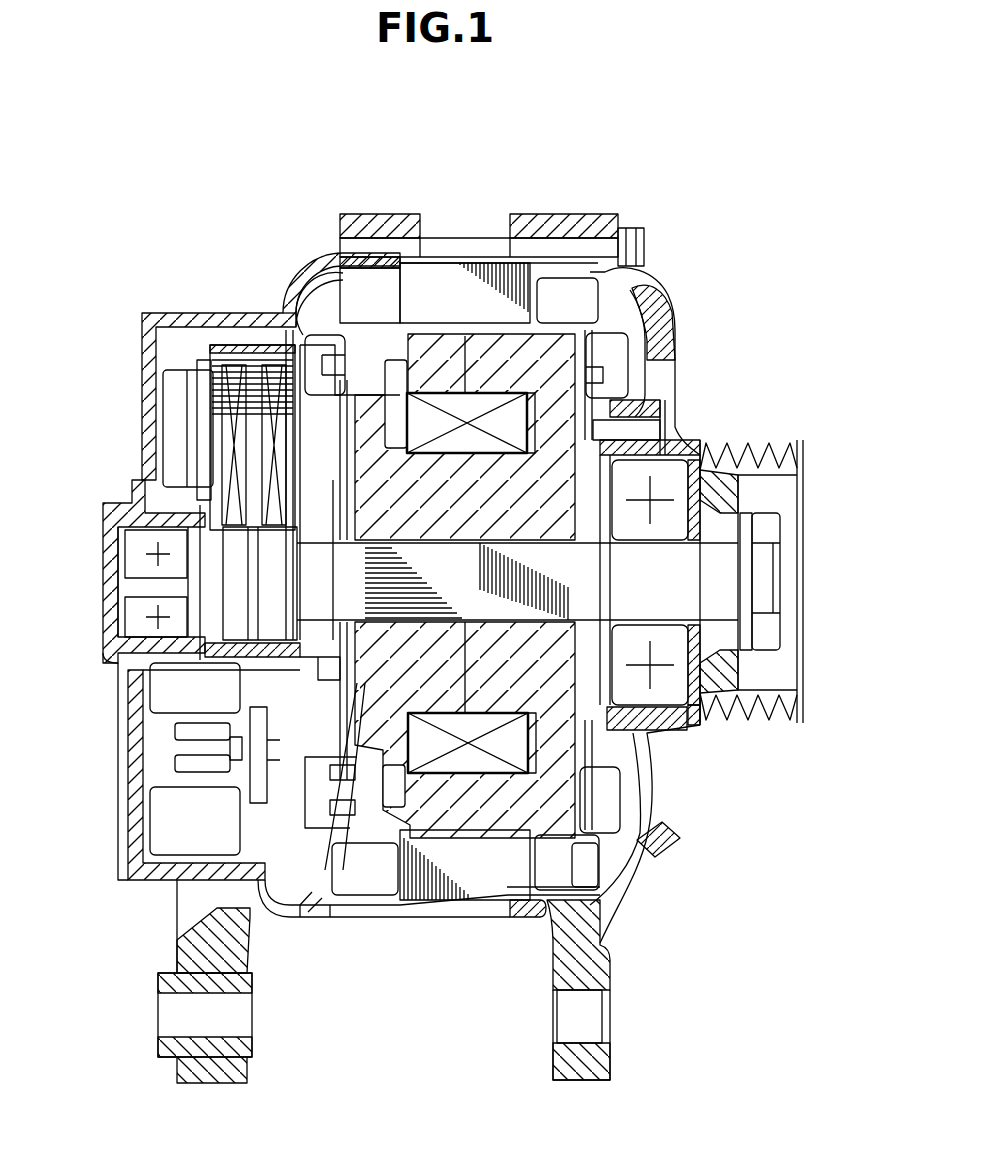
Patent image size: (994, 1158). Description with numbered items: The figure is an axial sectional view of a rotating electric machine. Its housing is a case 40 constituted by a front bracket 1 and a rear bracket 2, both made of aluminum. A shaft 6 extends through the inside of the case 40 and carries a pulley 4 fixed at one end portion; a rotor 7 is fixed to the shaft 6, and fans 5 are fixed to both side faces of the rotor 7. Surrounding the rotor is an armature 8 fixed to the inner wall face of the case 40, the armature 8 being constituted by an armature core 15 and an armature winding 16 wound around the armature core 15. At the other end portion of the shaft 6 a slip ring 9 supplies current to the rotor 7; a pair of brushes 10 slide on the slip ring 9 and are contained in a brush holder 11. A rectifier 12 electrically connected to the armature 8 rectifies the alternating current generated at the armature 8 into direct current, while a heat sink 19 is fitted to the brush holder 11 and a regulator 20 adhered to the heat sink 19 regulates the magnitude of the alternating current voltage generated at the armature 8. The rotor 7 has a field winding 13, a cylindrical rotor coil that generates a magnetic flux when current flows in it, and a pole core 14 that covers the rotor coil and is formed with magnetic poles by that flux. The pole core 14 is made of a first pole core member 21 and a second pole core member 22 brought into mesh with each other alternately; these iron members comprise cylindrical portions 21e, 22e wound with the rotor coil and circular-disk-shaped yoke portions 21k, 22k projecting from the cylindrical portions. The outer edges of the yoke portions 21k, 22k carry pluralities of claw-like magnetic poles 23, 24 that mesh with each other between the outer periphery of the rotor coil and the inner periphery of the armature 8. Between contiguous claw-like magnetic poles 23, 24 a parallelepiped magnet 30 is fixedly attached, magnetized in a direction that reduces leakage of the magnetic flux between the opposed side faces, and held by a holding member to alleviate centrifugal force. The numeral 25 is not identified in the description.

The front bracket 1 is at (537, 217).
The rear bracket 2 is at (397, 221).
The pulley 4 is at (740, 465).
The fans 5 is at (655, 850).
The shaft 6 is at (717, 553).
The rotor 7 is at (745, 770).
The armature 8 is at (625, 162).
The slip ring 9 is at (237, 572).
The brushes 10 is at (122, 540).
The brush holder 11 is at (220, 345).
The rectifier 12 is at (175, 748).
The field winding 13 is at (578, 737).
The pole core 14 is at (550, 800).
The armature core 15 is at (490, 263).
The armature winding 16 is at (563, 287).
The heat sink 19 is at (180, 430).
The regulator 20 is at (203, 398).
The first pole core member 21 is at (387, 850).
The cylindrical portion 21e is at (348, 905).
The yoke portion 21k is at (325, 900).
The second pole core member 22 is at (557, 837).
The cylindrical portion 22e is at (690, 720).
The yoke portion 22k is at (640, 735).
The claw-like magnetic poles 23 is at (496, 810).
The claw-like magnetic poles 24 is at (423, 820).
The stator core 25 is at (463, 827).
The magnet 30 is at (442, 345).
The case 40 is at (478, 162).